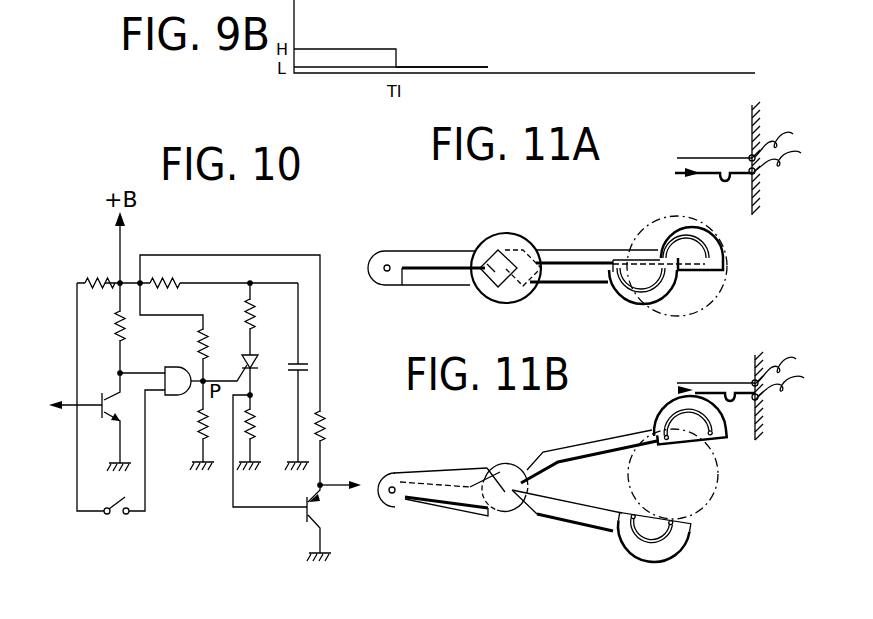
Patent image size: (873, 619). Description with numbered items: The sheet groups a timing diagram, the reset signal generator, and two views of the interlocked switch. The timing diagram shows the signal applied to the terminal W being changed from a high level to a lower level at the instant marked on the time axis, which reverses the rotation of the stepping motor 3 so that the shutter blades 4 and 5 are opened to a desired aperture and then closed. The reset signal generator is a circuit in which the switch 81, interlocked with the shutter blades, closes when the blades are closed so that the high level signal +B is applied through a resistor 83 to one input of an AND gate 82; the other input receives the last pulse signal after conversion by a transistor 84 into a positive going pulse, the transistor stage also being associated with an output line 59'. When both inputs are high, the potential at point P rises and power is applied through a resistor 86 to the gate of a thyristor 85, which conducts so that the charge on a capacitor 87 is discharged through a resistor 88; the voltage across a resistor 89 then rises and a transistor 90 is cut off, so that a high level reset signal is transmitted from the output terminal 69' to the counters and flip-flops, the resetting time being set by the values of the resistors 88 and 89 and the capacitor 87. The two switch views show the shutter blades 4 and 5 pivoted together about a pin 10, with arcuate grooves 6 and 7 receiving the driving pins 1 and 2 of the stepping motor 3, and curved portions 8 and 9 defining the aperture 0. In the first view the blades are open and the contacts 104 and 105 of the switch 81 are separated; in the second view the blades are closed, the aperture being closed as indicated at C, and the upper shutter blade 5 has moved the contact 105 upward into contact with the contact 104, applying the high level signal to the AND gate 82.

In FIG. 11A, the aperture 0 is at (485, 258).
In FIG. 11A, the driving pin 1 is at (610, 284).
In FIG. 11B, the driving pin 1 is at (680, 528).
In FIG. 11A, the driving pin 2 is at (710, 272).
In FIG. 11B, the driving pin 2 is at (659, 438).
In FIG. 11A, the stepping motor 3 is at (626, 240).
In FIG. 11B, the stepping motor 3 is at (718, 475).
In FIG. 11A, the shutter blade 4 is at (566, 285).
In FIG. 11B, the shutter blade 4 is at (542, 517).
In FIG. 11A, the shutter blade 5 is at (570, 250).
In FIG. 11B, the shutter blade 5 is at (568, 446).
In FIG. 11A, the arcuate groove 6 is at (637, 300).
In FIG. 11B, the arcuate groove 6 is at (666, 540).
In FIG. 11A, the arcuate groove 7 is at (692, 226).
In FIG. 11B, the arcuate groove 7 is at (666, 422).
In FIG. 11A, the curved portion 8 is at (486, 280).
In FIG. 11A, the curved portion 9 is at (500, 250).
In FIG. 11A, the pin 10 is at (386, 251).
In FIG. 11B, the pin 10 is at (392, 484).
In FIG. 11B, the closed aperture C is at (506, 497).
In FIG. 10, the output line 59' is at (75, 391).
In FIG. 10, the output terminal 69' is at (348, 472).
In FIG. 10, the switch 81 is at (118, 515).
In FIG. 11A, the switch 81 is at (665, 153).
In FIG. 11B, the switch 81 is at (676, 375).
In FIG. 10, the AND gate 82 is at (175, 395).
In FIG. 10, the resistor 83 is at (97, 279).
In FIG. 10, the transistor 84 is at (108, 392).
In FIG. 10, the thyristor 85 is at (252, 372).
In FIG. 10, the resistor 86 is at (201, 345).
In FIG. 10, the capacitor 87 is at (308, 367).
In FIG. 10, the resistor 88 is at (255, 308).
In FIG. 10, the resistor 89 is at (256, 422).
In FIG. 10, the transistor 90 is at (315, 512).
In FIG. 11A, the contact 104 is at (722, 156).
In FIG. 11B, the contact 104 is at (739, 382).
In FIG. 11A, the contact 105 is at (715, 178).
In FIG. 11B, the contact 105 is at (729, 405).